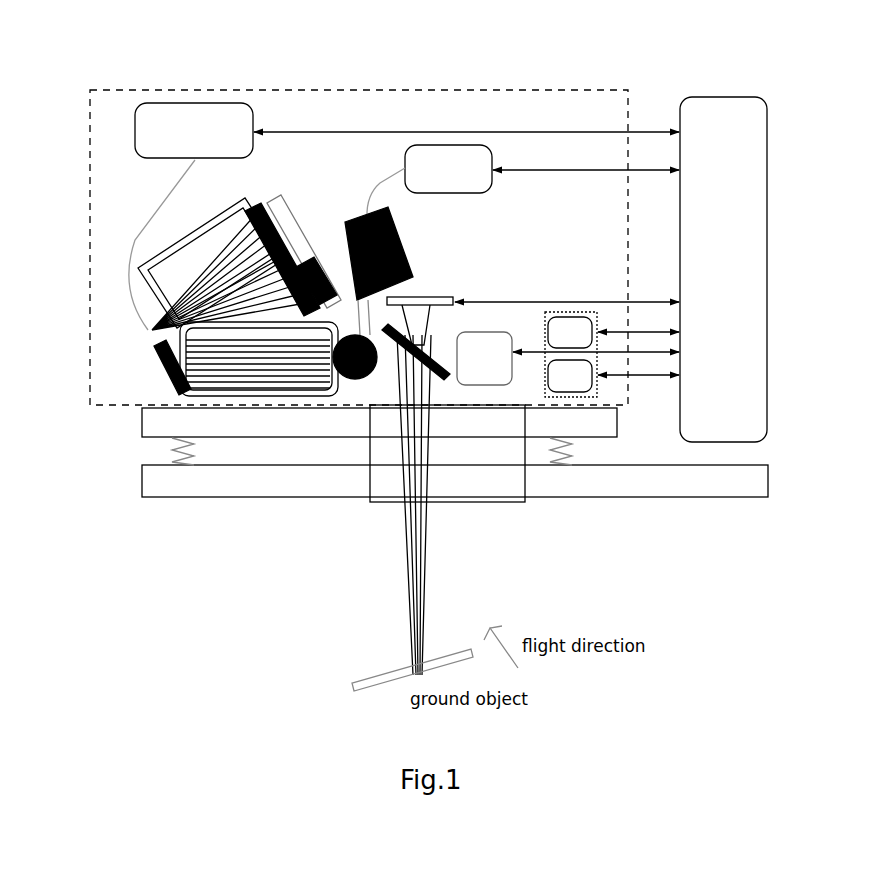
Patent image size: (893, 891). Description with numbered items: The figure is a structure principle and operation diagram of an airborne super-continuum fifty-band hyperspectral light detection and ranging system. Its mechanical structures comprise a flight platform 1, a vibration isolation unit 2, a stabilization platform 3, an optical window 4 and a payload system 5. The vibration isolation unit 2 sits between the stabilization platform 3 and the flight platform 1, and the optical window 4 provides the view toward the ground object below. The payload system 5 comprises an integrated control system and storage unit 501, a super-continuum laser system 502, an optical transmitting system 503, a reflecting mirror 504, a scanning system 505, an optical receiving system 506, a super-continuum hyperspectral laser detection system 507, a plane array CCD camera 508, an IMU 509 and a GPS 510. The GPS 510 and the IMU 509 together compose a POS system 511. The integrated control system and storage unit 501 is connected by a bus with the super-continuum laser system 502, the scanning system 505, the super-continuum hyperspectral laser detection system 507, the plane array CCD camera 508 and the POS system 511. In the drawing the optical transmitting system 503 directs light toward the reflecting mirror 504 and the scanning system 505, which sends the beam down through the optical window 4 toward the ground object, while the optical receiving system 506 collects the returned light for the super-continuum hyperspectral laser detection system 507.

The flight platform 1 is at (140, 487).
The vibration isolation unit 2 is at (168, 455).
The stabilization platform 3 is at (140, 424).
The optical window 4 is at (482, 504).
The payload system 5 is at (88, 250).
The integrated control system and storage unit 501 is at (717, 96).
The super-continuum laser system 502 is at (447, 144).
The optical transmitting system 503 is at (390, 213).
The reflecting mirror 504 is at (346, 332).
The scanning system 505 is at (417, 296).
The optical receiving system 506 is at (184, 229).
The super-continuum hyperspectral laser detection system 507 is at (200, 102).
The plane array CCD camera 508 is at (514, 372).
The IMU 509 is at (601, 380).
The GPS 510 is at (601, 340).
The POS system 511 is at (601, 353).